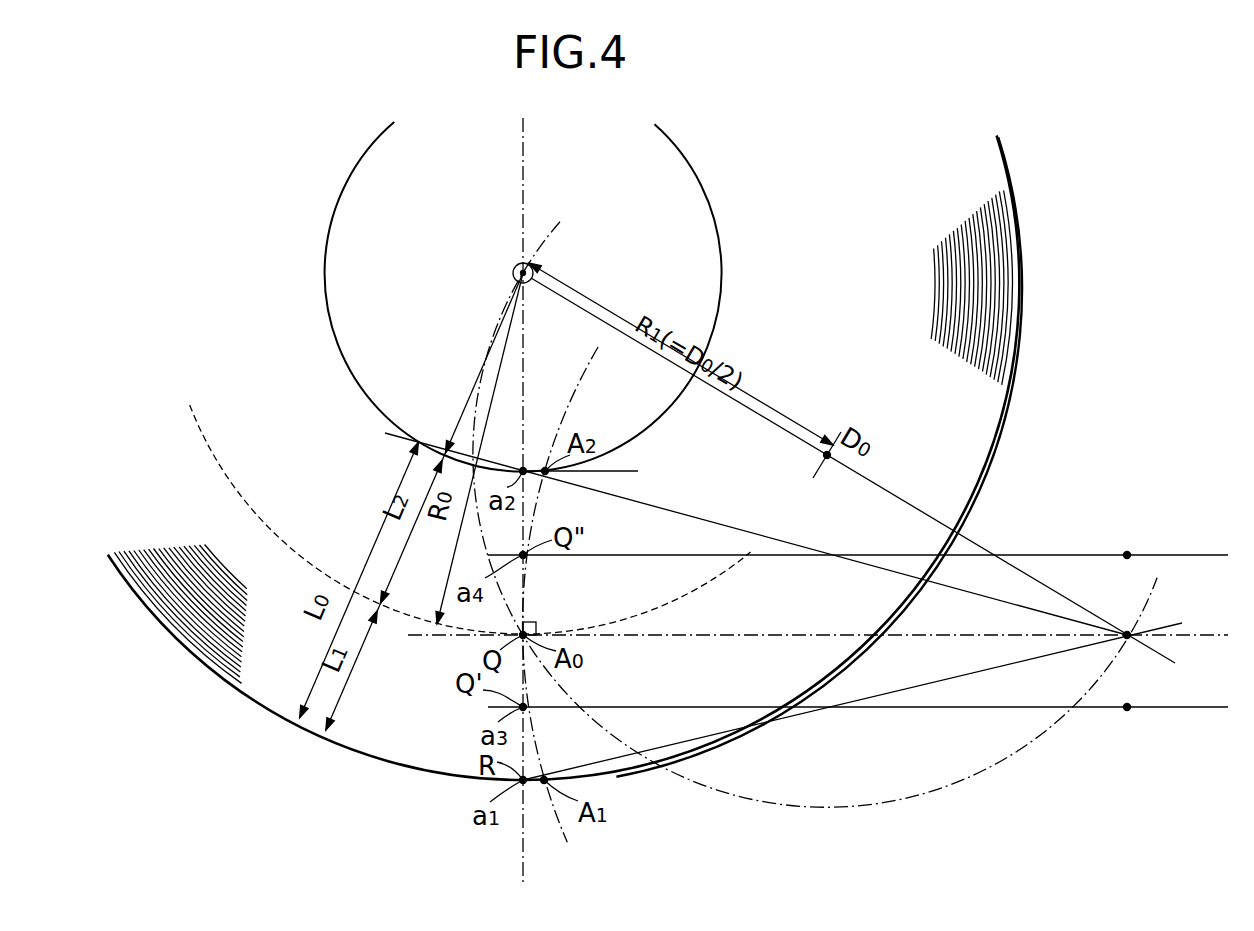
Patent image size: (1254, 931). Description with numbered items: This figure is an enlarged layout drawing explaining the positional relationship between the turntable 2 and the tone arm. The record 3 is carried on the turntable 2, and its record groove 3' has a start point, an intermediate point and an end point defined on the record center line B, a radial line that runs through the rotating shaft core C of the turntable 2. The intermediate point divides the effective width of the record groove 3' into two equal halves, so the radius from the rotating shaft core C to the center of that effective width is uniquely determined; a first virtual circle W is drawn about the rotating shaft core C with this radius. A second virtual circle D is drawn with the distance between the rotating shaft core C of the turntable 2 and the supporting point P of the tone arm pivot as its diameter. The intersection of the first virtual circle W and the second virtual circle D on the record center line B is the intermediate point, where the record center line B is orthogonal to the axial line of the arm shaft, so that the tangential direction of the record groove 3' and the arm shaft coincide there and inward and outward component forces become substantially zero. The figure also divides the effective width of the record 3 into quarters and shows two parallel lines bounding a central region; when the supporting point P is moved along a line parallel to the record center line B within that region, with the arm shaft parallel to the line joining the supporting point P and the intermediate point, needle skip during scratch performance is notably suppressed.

The turntable 2 is at (1017, 365).
The workpiece surface 3 is at (573, 458).
The record groove 3' is at (593, 443).
The rotating shaft core of the turntable C is at (512, 268).
The supporting point of the pivot portion of the tone arm P is at (1127, 635).
The axis A is at (578, 382).
The record center line B is at (1127, 767).
The second virtual circle D is at (835, 803).
The first virtual circle W is at (712, 580).